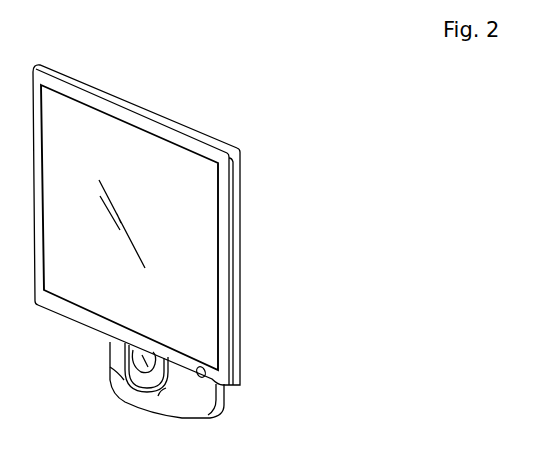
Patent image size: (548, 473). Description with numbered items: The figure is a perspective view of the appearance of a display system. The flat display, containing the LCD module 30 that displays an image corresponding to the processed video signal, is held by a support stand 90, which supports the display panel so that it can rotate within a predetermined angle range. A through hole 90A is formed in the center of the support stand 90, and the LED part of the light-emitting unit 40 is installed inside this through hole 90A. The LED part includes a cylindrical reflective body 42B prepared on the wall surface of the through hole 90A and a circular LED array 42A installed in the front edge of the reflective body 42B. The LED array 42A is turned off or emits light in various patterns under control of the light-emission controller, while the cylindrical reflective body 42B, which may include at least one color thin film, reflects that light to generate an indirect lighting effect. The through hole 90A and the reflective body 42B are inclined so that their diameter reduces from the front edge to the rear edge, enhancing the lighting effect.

The LCD module 30 is at (240, 340).
The light-emitting unit 40 is at (103, 380).
The circular LED array 42A is at (120, 368).
The cylindrical reflective body 42B is at (124, 381).
The support stand 90 is at (200, 408).
The through hole 90A is at (150, 365).